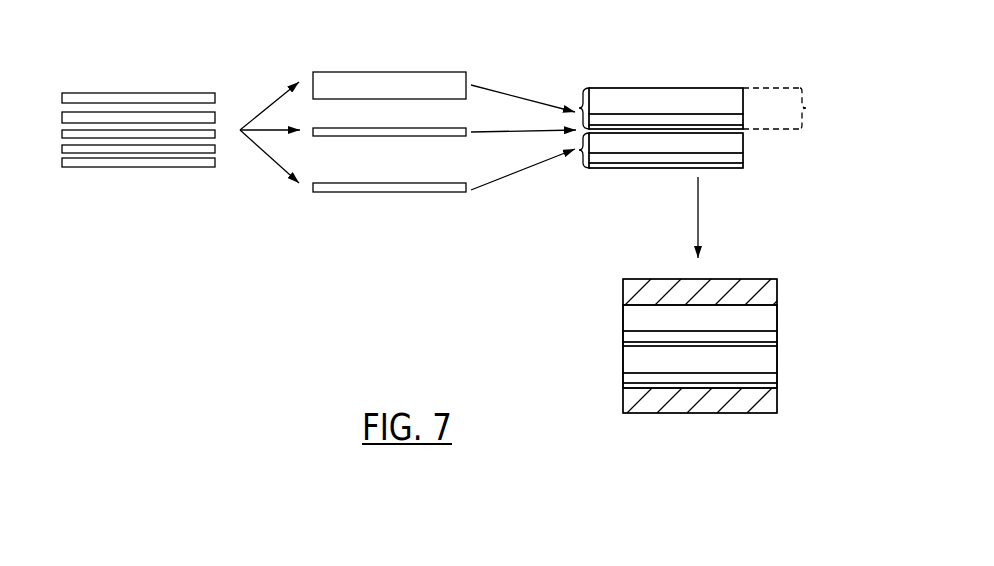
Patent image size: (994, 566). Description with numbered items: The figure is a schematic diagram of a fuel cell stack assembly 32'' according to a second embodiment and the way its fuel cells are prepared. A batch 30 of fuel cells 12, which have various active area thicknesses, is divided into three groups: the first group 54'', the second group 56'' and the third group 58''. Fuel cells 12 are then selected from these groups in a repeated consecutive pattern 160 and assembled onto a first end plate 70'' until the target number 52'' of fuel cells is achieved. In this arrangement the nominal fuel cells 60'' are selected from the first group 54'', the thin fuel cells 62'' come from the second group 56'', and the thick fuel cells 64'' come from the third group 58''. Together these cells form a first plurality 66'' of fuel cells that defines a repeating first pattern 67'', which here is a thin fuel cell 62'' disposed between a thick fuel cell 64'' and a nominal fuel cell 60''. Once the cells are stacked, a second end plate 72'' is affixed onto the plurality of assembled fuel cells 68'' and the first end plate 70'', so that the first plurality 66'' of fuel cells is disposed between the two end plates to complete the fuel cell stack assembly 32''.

The batch of fuel cells 30 is at (163, 100).
The fuel cells 12 is at (215, 118).
The third group 58'' is at (406, 71).
The second group 56'' is at (406, 118).
The first group 54'' is at (406, 174).
The repeated consecutive pattern 160 is at (580, 106).
The first plurality of fuel cells 66'' is at (648, 88).
The thick fuel cell 64'' is at (707, 212).
The nominal fuel cell 60'' is at (707, 238).
The thin fuel cell 62'' is at (707, 264).
The first pattern 67'' is at (787, 108).
The fuel cell stack assembly 32'' is at (681, 309).
The second end plate 72'' is at (711, 264).
The first end plate 70'' is at (712, 429).
The target number of fuel cells 52'' is at (637, 346).
The plurality of assembled fuel cells 68'' is at (637, 346).